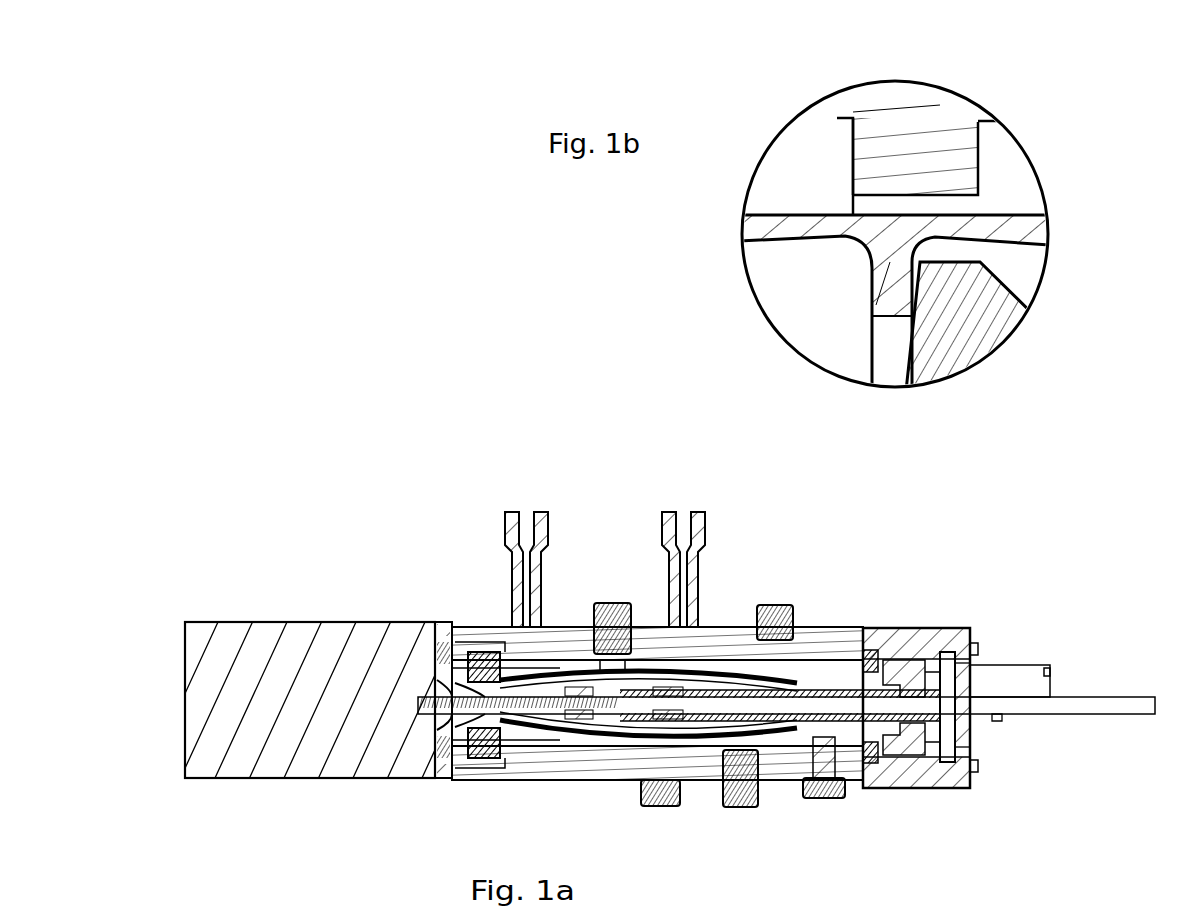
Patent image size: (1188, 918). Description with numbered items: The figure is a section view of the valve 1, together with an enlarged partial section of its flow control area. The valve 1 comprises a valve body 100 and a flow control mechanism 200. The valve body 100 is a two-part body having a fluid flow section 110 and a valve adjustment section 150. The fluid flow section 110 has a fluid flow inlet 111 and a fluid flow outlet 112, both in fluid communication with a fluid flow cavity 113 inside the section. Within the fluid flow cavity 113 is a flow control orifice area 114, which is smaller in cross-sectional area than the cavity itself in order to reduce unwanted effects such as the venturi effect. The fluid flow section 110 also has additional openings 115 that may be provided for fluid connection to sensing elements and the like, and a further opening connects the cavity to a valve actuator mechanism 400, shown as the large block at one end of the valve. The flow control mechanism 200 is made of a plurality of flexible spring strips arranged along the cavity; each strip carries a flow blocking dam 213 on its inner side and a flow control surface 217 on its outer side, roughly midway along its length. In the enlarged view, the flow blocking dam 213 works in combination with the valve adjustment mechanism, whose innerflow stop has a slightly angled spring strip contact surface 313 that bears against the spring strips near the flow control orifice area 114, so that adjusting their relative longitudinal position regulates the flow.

In FIG. 1A, the valve 1 is at (405, 523).
In FIG. 1A, the valve body 100 is at (740, 627).
In FIG. 1A, the fluid flow section 110 is at (833, 628).
In FIG. 1A, the fluid flow inlet 111 is at (518, 510).
In FIG. 1A, the fluid flow outlet 112 is at (698, 560).
In FIG. 1B, the fluid flow cavity 113 is at (830, 190).
In FIG. 1A, the fluid flow cavity 113 is at (572, 665).
In FIG. 1B, the flow control orifice area 114 is at (923, 193).
In FIG. 1A, the flow control orifice area 114 is at (632, 670).
In FIG. 1A, the additional openings 115 is at (612, 603).
In FIG. 1A, the valve adjustment section 150 is at (908, 770).
In FIG. 1A, the flow control mechanism 200 is at (513, 717).
In FIG. 1B, the flow blocking dam 213 is at (890, 277).
In FIG. 1B, the flow control surface 217 is at (892, 213).
In FIG. 1B, the spring strip contact surface 313 is at (920, 294).
In FIG. 1A, the valve actuator mechanism 400 is at (330, 620).